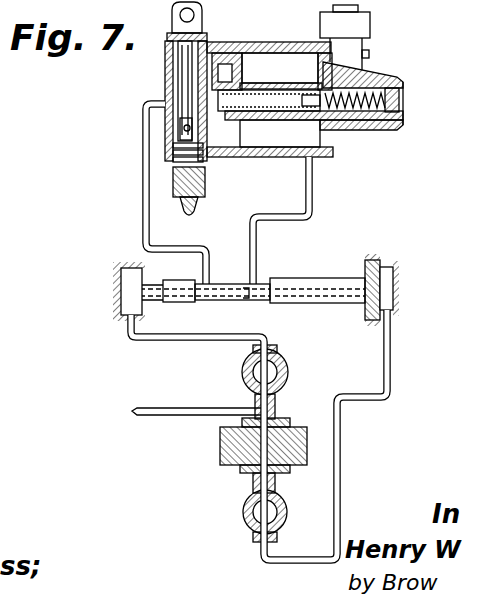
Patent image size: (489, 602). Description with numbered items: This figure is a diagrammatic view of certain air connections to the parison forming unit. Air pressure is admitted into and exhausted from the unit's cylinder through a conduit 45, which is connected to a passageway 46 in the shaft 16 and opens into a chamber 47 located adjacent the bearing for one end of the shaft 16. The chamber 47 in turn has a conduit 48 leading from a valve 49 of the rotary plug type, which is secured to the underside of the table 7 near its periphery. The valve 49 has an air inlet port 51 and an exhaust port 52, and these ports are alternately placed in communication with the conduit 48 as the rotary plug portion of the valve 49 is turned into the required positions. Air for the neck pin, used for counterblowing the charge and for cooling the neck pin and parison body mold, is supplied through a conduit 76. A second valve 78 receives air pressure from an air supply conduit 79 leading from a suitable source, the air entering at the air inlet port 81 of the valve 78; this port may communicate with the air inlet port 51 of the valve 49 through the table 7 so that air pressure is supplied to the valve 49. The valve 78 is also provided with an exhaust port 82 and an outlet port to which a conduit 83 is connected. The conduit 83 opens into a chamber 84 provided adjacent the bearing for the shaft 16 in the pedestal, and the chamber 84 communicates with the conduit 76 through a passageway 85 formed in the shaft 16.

The table 7 is at (220, 447).
The shaft 16 is at (246, 301).
The conduit 45 is at (257, 246).
The passageway 46 is at (328, 288).
The chamber 47 is at (395, 275).
The conduit 48 is at (341, 450).
The valve 49 is at (250, 530).
The air inlet port 51 is at (262, 477).
The exhaust port 52 is at (247, 512).
The conduit 76 is at (143, 136).
The valve 78 is at (244, 384).
The air supply conduit 79 is at (166, 408).
The air inlet port 81 is at (268, 407).
The exhaust port 82 is at (248, 375).
The conduit 83 is at (163, 341).
The chamber 84 is at (121, 294).
The passageway 85 is at (205, 298).